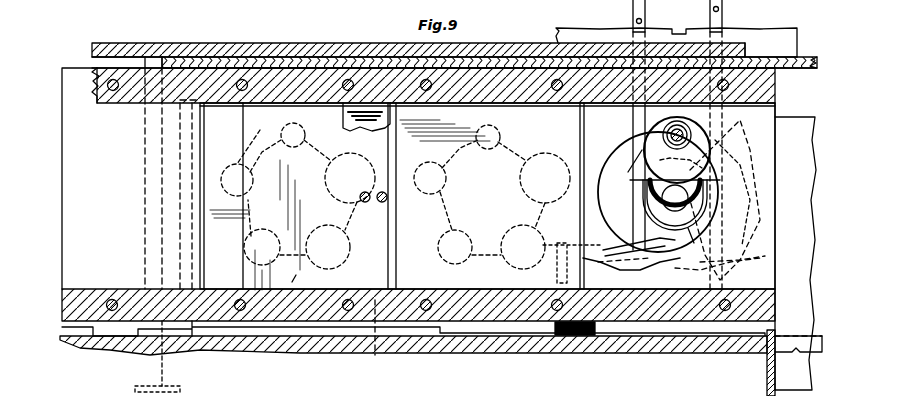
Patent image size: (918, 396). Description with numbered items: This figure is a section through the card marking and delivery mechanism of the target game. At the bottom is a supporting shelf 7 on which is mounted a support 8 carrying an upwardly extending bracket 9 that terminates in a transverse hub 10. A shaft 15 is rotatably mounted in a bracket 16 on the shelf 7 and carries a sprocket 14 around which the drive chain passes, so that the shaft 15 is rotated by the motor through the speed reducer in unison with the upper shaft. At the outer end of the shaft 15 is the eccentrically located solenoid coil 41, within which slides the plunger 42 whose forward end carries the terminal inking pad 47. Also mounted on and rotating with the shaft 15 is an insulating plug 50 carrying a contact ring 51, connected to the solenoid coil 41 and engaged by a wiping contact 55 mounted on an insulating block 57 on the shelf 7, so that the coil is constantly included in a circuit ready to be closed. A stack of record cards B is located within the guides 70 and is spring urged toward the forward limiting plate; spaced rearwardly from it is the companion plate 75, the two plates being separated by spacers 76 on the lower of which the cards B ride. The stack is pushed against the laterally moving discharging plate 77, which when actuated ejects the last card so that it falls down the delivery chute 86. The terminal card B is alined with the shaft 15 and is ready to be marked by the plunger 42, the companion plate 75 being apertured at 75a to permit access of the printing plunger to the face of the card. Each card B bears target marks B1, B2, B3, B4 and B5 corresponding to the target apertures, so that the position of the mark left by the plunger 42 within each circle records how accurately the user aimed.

The supporting shelf 7 is at (667, 345).
The support 8 is at (800, 60).
The upwardly extending bracket 9 is at (675, 32).
The transverse hub 10 is at (731, 145).
The sprocket 14 is at (728, 143).
The shaft 15 is at (662, 198).
The bracket 16 is at (770, 262).
The solenoid coil 41 is at (640, 168).
The plunger 42 is at (690, 124).
The terminal inking pad 47 is at (677, 128).
The insulating plug 50 is at (652, 208).
The contact ring 51 is at (655, 222).
The wiping contact 55 is at (660, 262).
The insulating block 57 is at (552, 335).
The guides 70 is at (190, 143).
The companion plate 75 is at (83, 221).
The aperture 75a is at (610, 156).
The spacers 76 is at (135, 80).
The discharging plate 77 is at (295, 283).
The delivery chute 86 is at (765, 381).
The record card B is at (224, 280).
The target mark B1 is at (352, 160).
The target mark B2 is at (345, 258).
The target mark B3 is at (244, 248).
The target mark B4 is at (232, 166).
The target mark B5 is at (303, 130).